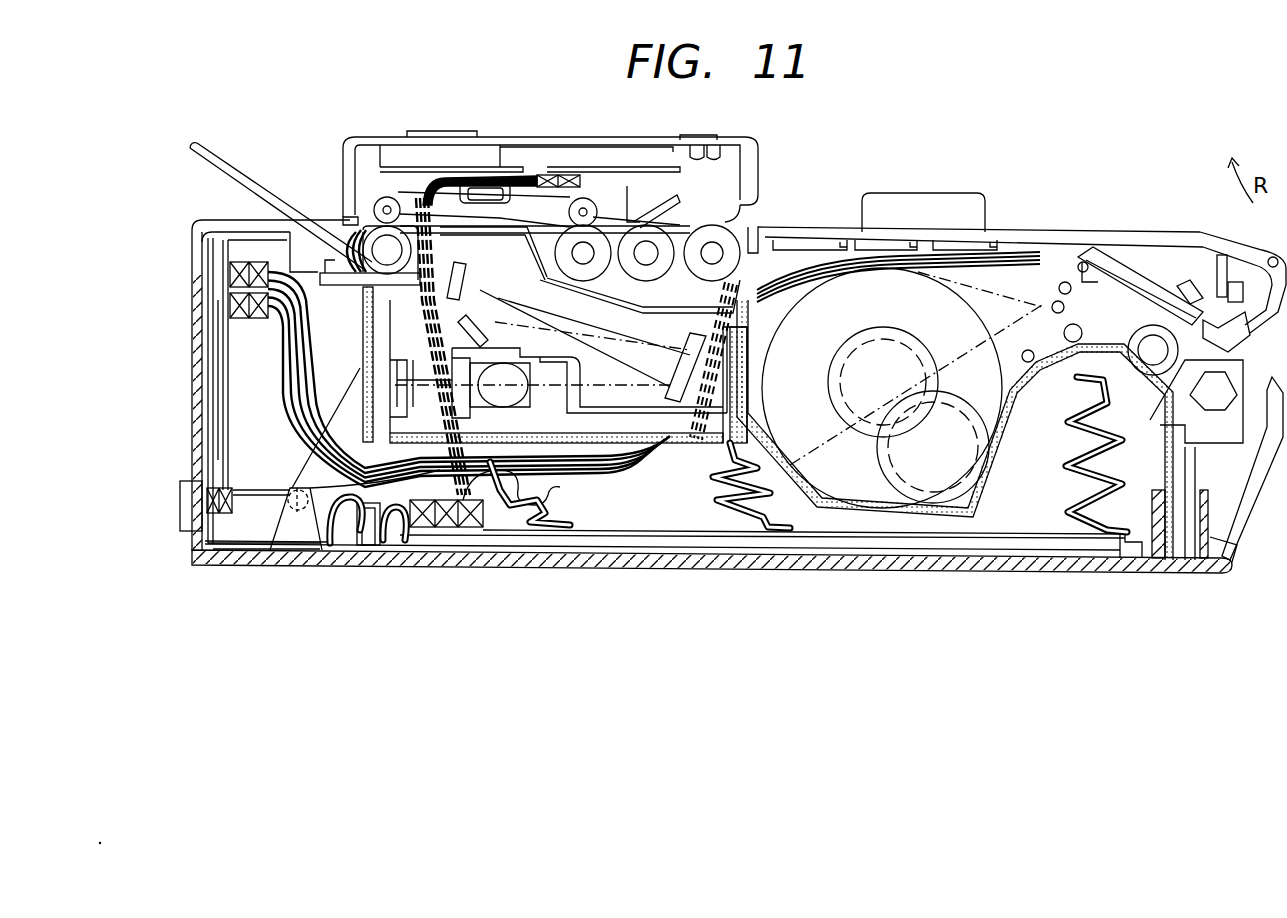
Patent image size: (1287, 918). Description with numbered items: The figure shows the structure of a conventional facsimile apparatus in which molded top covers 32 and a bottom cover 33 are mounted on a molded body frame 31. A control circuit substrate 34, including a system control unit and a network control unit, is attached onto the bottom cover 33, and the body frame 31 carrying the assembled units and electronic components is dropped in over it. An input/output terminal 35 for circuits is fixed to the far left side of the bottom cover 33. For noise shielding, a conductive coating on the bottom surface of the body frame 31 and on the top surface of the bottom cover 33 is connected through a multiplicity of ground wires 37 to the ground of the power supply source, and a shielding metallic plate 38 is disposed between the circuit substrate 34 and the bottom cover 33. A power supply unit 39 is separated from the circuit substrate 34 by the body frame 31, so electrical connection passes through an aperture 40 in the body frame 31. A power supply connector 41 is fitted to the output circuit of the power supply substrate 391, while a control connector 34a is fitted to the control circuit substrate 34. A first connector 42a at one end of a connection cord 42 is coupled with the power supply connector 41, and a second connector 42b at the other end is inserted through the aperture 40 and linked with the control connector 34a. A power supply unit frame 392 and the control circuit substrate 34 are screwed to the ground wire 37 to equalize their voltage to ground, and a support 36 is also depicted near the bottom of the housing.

The body frame 31 is at (840, 512).
The top cover 32 is at (1097, 230).
The bottom cover 33 is at (668, 568).
The control circuit substrate 34 is at (598, 538).
The control connector 34a is at (440, 528).
The input/output terminal 35 is at (180, 505).
The support 36 is at (299, 512).
The ground wire 37 is at (398, 545).
The shielding metallic plate 38 is at (740, 550).
The power supply unit 39 is at (235, 338).
The power supply substrate 391 is at (215, 390).
The power supply unit frame 392 is at (250, 548).
The aperture 40 is at (510, 470).
The power supply connector 41 is at (230, 272).
The connection cord 42 is at (305, 322).
The first connector 42a is at (298, 268).
The second connector 42b is at (490, 530).